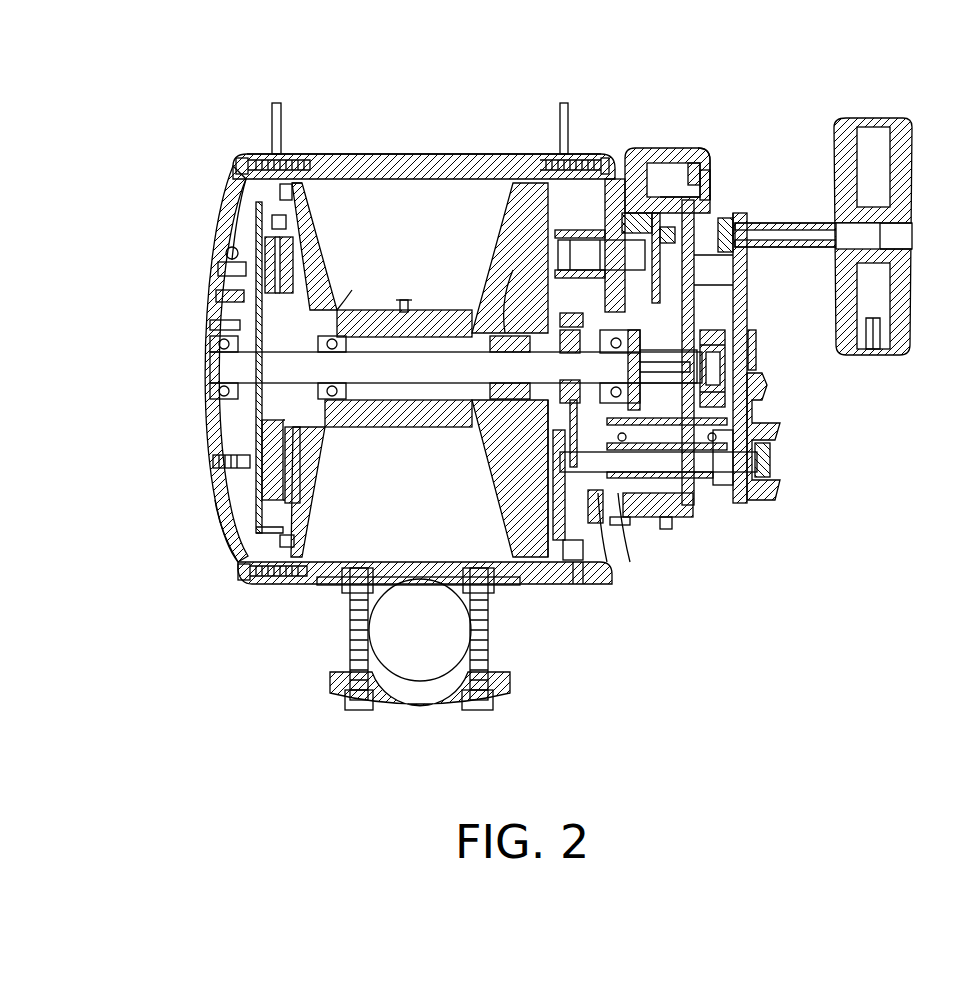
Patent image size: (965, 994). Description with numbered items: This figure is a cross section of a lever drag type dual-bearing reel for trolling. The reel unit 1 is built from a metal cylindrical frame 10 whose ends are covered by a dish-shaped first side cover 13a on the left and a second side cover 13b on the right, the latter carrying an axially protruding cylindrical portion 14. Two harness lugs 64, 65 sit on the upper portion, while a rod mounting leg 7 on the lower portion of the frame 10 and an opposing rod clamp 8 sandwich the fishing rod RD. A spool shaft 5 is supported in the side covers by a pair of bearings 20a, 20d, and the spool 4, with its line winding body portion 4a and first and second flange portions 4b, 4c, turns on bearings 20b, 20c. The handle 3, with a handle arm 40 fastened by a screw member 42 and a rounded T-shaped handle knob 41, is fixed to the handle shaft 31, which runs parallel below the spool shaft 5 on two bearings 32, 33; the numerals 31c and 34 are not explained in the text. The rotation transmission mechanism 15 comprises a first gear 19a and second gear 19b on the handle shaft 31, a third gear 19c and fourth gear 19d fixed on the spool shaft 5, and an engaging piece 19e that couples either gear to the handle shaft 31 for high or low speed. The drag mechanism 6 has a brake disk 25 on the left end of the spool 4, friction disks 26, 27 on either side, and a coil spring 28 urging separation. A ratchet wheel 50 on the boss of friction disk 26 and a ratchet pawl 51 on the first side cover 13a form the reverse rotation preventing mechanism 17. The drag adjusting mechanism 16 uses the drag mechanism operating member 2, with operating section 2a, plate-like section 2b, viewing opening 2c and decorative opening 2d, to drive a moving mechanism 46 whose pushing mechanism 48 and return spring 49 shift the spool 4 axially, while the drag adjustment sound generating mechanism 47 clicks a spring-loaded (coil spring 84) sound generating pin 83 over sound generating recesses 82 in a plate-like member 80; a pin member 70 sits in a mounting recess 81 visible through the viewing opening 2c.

The reel unit 1 is at (498, 90).
The drag mechanism operating member 2 is at (760, 112).
The operating section 2a is at (697, 160).
The plate-like section 2b is at (740, 258).
The viewing opening 2c is at (702, 245).
The decorative opening 2d is at (692, 285).
The handle 3 is at (790, 218).
The spool 4 is at (455, 305).
The line winding body portion 4a is at (405, 312).
The first flange portion 4b is at (300, 212).
The second flange portion 4c is at (535, 182).
The spool shaft 5 is at (376, 360).
The drag mechanism 6 is at (238, 210).
The rod mounting leg 7 is at (345, 582).
The rod clamp 8 is at (332, 680).
The fishing rod RD is at (375, 625).
The frame 10 is at (402, 152).
The first side cover 13a is at (215, 235).
The second side cover 13b is at (596, 185).
The cylindrical portion 14 is at (697, 300).
The rotation transmission mechanism 15 is at (583, 562).
The drag adjusting mechanism 16 is at (740, 98).
The reverse rotation preventing mechanism 17 is at (225, 440).
The first gear 19a is at (590, 560).
The second gear 19b is at (556, 528).
The third gear 19c is at (628, 390).
The fourth gear 19d is at (555, 280).
The engaging piece 19e is at (556, 480).
The bearing 20a is at (212, 325).
The bearing 20b is at (345, 302).
The bearing 20c is at (515, 275).
The bearing 20d is at (645, 540).
The brake disk 25 is at (292, 512).
The friction disk 26 is at (284, 425).
The friction disk 27 is at (300, 480).
The coil spring 28 is at (240, 497).
The handle shaft 31 is at (688, 480).
The drive shaft flange 31c is at (662, 530).
The bearing 32 is at (620, 558).
The bearing 33 is at (725, 490).
The spool shaft bearing 34 is at (535, 340).
The handle arm 40 is at (772, 392).
The handle knob 41 is at (910, 160).
The screw member 42 is at (778, 430).
The moving mechanism 46 is at (760, 362).
The drag adjustment sound generating mechanism 47 is at (672, 92).
The pushing mechanism 48 is at (722, 318).
The return spring 49 is at (218, 360).
The ratchet wheel 50 is at (220, 300).
The ratchet pawl 51 is at (226, 270).
The harness lug 64 is at (288, 105).
The harness lug 65 is at (564, 105).
The pin member 70 is at (735, 200).
The plate-like member 80 is at (656, 200).
The mounting recess 81 is at (712, 220).
The sound generating recesses 82 is at (692, 215).
The sound generating pin 83 is at (645, 222).
The coil spring 84 is at (627, 210).